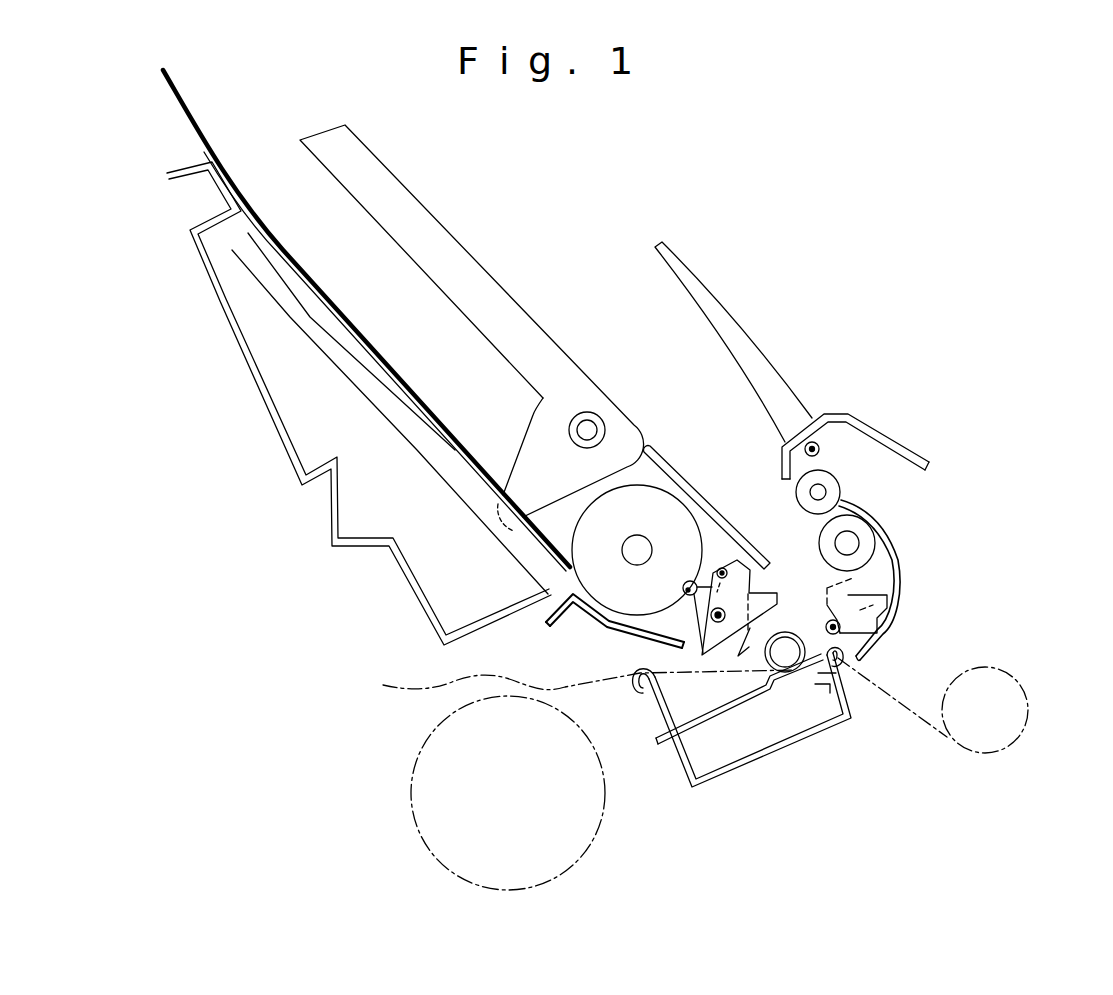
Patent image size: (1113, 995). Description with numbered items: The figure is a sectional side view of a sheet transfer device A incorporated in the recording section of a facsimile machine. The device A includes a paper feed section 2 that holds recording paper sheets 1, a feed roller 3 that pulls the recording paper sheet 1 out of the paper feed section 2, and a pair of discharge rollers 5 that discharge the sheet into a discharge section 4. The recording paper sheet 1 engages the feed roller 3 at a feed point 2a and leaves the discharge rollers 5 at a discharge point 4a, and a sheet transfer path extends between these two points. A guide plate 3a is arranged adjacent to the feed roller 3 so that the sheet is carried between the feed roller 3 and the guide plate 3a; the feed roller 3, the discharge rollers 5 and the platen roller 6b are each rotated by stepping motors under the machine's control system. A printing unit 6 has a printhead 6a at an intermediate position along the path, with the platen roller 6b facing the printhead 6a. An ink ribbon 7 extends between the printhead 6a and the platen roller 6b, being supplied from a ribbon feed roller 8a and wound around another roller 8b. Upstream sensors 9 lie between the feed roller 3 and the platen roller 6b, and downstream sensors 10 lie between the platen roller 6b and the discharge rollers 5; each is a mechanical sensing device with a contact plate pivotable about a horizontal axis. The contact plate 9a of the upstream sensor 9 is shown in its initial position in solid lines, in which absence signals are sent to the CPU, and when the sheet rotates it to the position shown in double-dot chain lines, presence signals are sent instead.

The sheet transfer device A is at (636, 162).
The recording paper sheet 1 is at (178, 76).
The paper feed section 2 is at (413, 323).
The feed point 2a is at (556, 532).
The feed roller 3 is at (680, 527).
The guide plate 3a is at (597, 623).
The discharge section 4 is at (706, 368).
The discharge point 4a is at (798, 535).
The discharge rollers 5 is at (843, 482).
The printing unit 6 is at (808, 697).
The printhead 6a is at (787, 690).
The platen roller 6b is at (767, 665).
The ink ribbon 7 is at (578, 679).
The ribbon feed roller 8a is at (447, 806).
The roller 8b is at (988, 698).
The sensors 9 is at (693, 648).
The contact plate 9a is at (711, 658).
The sensors 10 is at (883, 608).